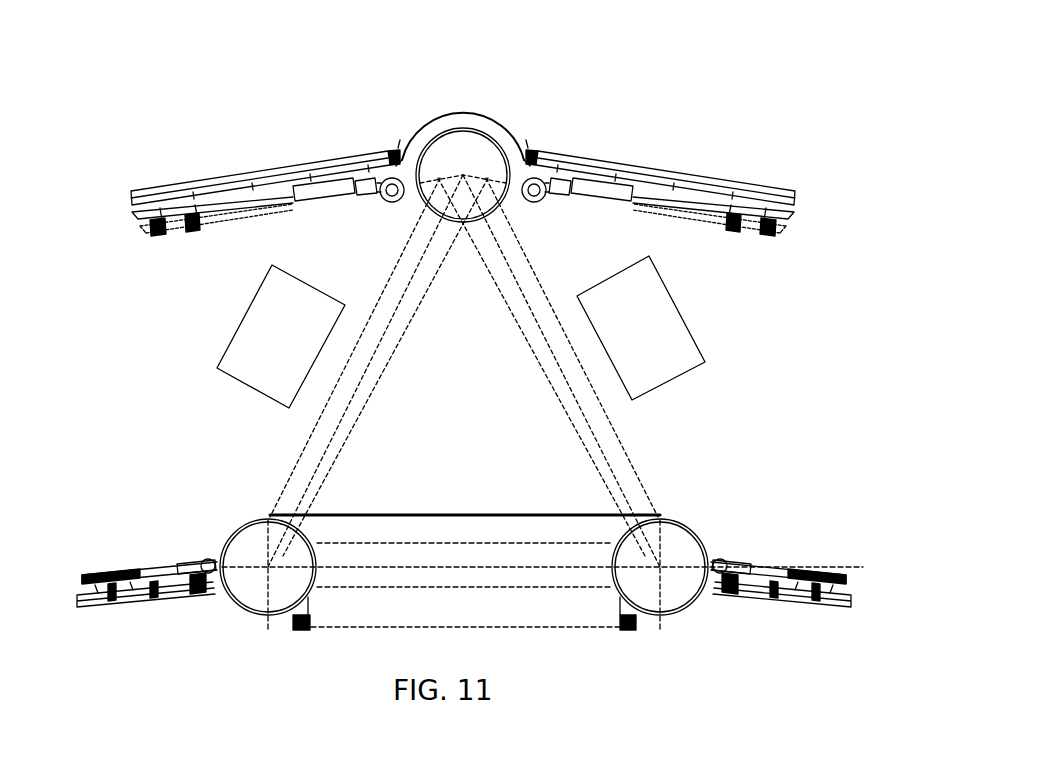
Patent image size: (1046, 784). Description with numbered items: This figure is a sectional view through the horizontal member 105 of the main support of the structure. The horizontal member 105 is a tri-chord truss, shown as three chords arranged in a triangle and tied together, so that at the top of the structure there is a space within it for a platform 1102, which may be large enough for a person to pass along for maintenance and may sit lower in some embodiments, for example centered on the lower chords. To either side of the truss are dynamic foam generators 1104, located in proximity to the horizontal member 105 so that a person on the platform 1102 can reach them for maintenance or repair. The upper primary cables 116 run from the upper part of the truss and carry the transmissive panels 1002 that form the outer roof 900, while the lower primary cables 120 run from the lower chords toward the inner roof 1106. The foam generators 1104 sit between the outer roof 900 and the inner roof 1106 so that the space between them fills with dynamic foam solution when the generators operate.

The outer roof 900 is at (652, 128).
The upper primary cables 116 is at (220, 217).
The transmissive panels 1002 is at (753, 190).
The horizontal member 105 is at (528, 268).
The dynamic foam generators 1104 is at (242, 316).
The lower primary cables 120 is at (148, 572).
The platform 1102 is at (462, 516).
The inner roof 1106 is at (813, 636).